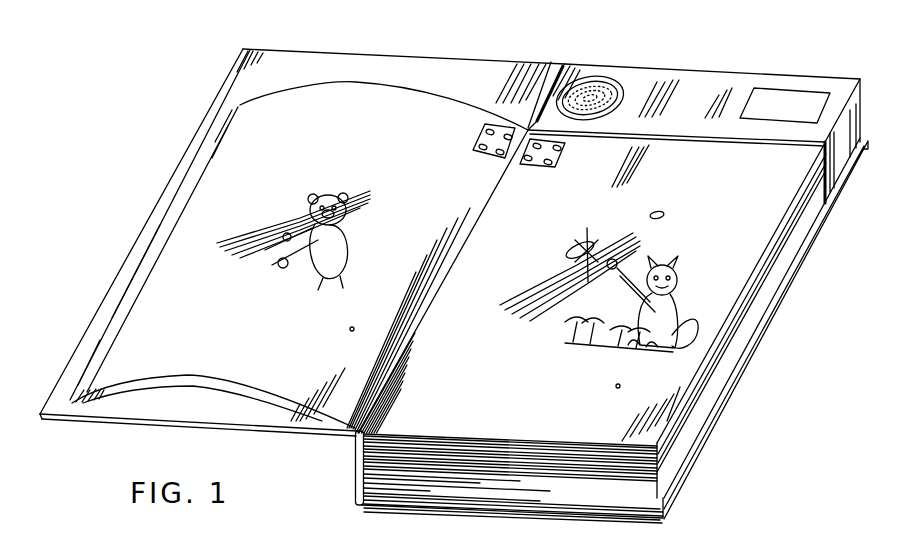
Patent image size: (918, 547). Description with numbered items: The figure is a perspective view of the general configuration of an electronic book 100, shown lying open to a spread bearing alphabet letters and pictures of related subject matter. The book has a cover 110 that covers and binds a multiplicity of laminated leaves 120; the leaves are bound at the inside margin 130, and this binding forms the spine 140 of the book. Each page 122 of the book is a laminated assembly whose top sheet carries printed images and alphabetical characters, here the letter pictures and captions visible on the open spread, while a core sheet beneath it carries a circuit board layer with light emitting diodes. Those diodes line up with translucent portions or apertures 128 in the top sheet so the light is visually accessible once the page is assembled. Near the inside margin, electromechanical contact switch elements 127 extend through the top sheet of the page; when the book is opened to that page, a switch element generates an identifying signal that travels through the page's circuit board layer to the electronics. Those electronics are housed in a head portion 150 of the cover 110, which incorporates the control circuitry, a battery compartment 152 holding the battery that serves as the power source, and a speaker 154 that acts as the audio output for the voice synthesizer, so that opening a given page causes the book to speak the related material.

The electronic book 100 is at (710, 28).
The cover 110 is at (143, 423).
The laminated leaves 120 is at (170, 388).
The page 122 is at (427, 286).
The electromechanical contact switch elements 127 is at (546, 167).
The apertures 128 is at (665, 212).
The inside margin 130 is at (528, 130).
The spine 140 is at (361, 474).
The head portion 150 is at (717, 80).
The battery compartment 152 is at (804, 97).
The speaker 154 is at (598, 82).